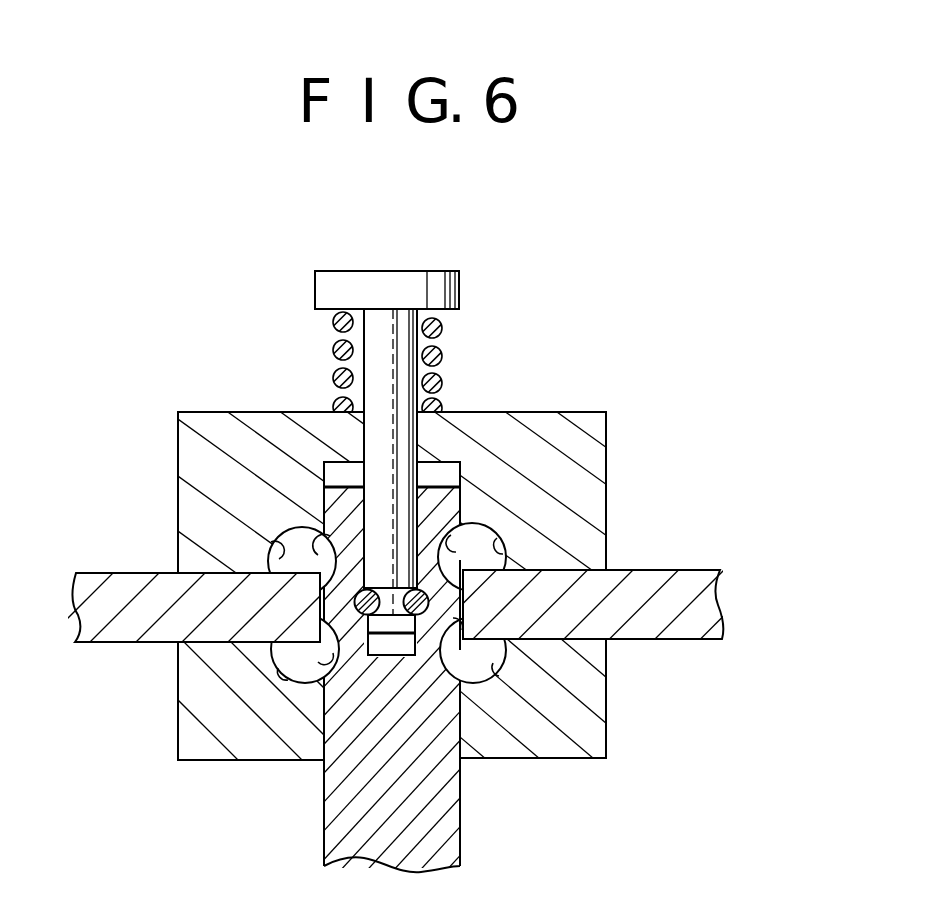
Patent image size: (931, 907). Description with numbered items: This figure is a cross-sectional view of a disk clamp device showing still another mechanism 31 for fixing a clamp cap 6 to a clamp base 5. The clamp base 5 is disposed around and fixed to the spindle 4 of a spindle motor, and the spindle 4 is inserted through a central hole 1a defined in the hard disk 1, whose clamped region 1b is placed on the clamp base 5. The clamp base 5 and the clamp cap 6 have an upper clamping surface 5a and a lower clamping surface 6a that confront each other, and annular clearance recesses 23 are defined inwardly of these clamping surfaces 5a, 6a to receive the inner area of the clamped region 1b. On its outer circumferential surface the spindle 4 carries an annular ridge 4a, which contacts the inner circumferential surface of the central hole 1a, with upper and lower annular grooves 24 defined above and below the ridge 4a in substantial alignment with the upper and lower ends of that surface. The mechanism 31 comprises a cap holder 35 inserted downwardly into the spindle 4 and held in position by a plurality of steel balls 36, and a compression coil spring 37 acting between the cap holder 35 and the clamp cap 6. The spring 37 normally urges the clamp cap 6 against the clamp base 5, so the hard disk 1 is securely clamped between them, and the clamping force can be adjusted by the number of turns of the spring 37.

The hard disk 1 is at (727, 590).
The central hole 1a is at (468, 638).
The clamped region 1b is at (580, 610).
The spindle 4 is at (363, 817).
The annular ridge 4a is at (463, 600).
The clamp base 5 is at (220, 725).
The upper clamping surface 5a is at (228, 643).
The clamp cap 6 is at (586, 452).
The lower clamping surface 6a is at (563, 567).
The annular clearance recess 23 is at (270, 533).
The annular groove 24 is at (313, 547).
The mechanism 31 is at (470, 279).
The cap holder 35 is at (387, 357).
The steel ball 36 is at (368, 590).
The compression coil spring 37 is at (443, 356).